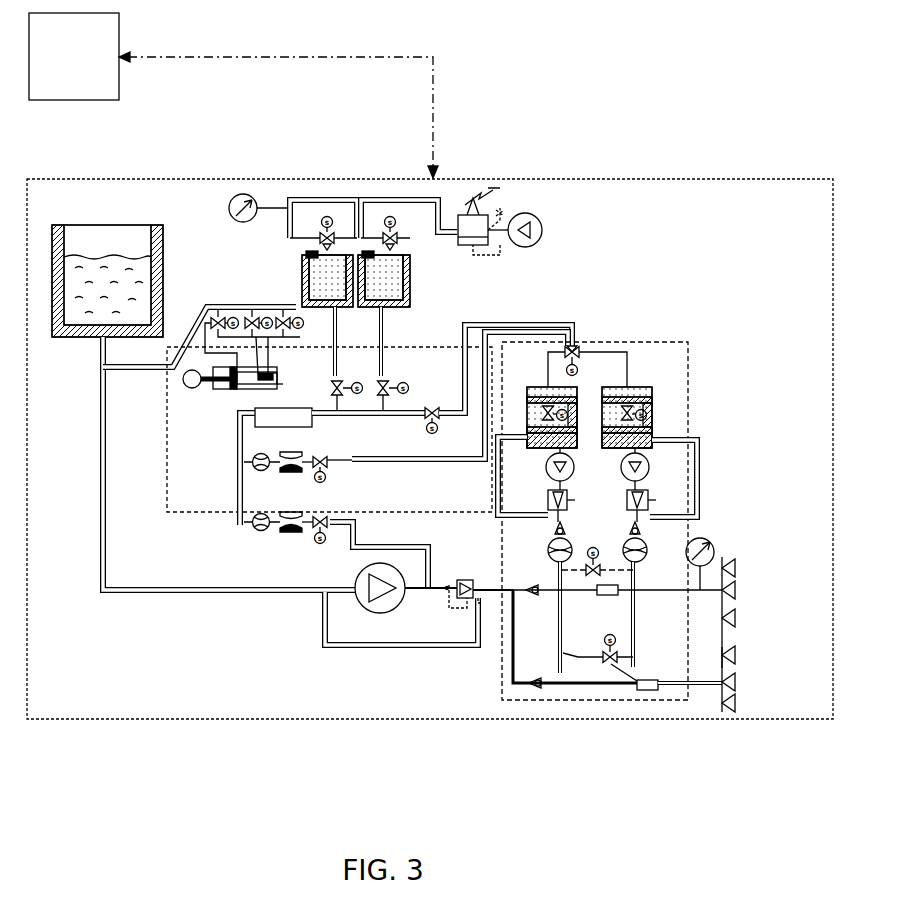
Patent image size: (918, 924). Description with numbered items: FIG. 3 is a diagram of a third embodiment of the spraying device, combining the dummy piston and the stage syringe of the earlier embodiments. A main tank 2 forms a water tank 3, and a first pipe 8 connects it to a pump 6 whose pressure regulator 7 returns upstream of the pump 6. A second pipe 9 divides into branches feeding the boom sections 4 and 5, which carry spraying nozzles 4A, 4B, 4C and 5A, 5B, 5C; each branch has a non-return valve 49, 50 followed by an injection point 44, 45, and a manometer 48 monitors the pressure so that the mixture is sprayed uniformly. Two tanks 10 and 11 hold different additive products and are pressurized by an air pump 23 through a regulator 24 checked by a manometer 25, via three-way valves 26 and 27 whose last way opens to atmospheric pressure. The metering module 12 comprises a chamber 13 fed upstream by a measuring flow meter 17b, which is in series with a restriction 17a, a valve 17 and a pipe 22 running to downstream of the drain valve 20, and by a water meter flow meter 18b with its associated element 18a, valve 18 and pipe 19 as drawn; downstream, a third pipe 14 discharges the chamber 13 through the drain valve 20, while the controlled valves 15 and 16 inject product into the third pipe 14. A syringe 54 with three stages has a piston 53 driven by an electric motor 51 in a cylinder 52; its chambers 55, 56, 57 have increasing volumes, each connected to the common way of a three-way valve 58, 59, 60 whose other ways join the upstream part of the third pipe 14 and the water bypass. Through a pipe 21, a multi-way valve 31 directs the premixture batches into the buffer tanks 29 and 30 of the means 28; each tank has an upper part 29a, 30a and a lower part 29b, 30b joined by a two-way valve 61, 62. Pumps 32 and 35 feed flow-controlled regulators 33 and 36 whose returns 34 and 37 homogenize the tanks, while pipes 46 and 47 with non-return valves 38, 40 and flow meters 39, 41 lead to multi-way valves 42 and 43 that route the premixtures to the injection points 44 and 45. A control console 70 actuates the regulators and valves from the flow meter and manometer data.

The main tank 2 is at (57, 224).
The water tank 3 is at (104, 258).
The boom section 4 is at (720, 607).
The spraying nozzle 4A is at (737, 567).
The spraying nozzle 4B is at (737, 590).
The spraying nozzle 4C is at (737, 618).
The boom section 5 is at (720, 705).
The spraying nozzle 5A is at (737, 654).
The spraying nozzle 5B is at (737, 682).
The spraying nozzle 5C is at (737, 704).
The pump 6 is at (357, 578).
The pressure regulator 7 is at (461, 579).
The first pipe 8 is at (100, 590).
The second pipe 9 is at (511, 668).
The additive product tank 10 is at (302, 294).
The additive product tank 11 is at (412, 294).
The metering module 12 is at (167, 505).
The chamber 13 is at (276, 427).
The third pipe 14 is at (370, 416).
The controlled valve 15 is at (343, 378).
The controlled valve 16 is at (389, 379).
The valve 17 is at (328, 468).
The restriction 17a is at (292, 472).
The measuring flow meter 17b is at (254, 468).
The valve 18 is at (316, 530).
The check element 18a is at (290, 534).
The water meter flow meter 18b is at (254, 530).
The pipe 19 is at (388, 547).
The drain valve 20 is at (426, 420).
The pipe 21 is at (463, 362).
The pipe 22 is at (433, 462).
The air pump 23 is at (536, 217).
The regulator 24 is at (463, 214).
The manometer 25 is at (233, 217).
The three-way valve 26 is at (323, 234).
The three-way valve 27 is at (396, 234).
The directing and injecting means 28 is at (688, 340).
The buffer tank 29 is at (528, 391).
The upper part 29a is at (528, 400).
The lower part 29b is at (528, 431).
The buffer tank 30 is at (650, 390).
The upper part 30a is at (652, 400).
The lower part 30b is at (652, 433).
The multi-way valve 31 is at (578, 346).
The pump 32 is at (546, 469).
The flow-controlled regulator 33 is at (548, 502).
The return 34 is at (497, 515).
The pump 35 is at (650, 470).
The flow-controlled regulator 36 is at (649, 502).
The return 37 is at (700, 492).
The non-return valve 38 is at (554, 529).
The flow meter 39 is at (548, 551).
The non-return valve 40 is at (641, 529).
The flow meter 41 is at (648, 551).
The multi-way valve 42 is at (597, 563).
The multi-way valve 43 is at (608, 662).
The injection point 44 is at (603, 595).
The injection point 45 is at (650, 680).
The pipe 46 is at (563, 626).
The pipe 47 is at (633, 622).
The manometer 48 is at (712, 540).
The non-return valve 49 is at (532, 596).
The non-return valve 50 is at (535, 678).
The electric motor 51 is at (190, 388).
The cylinder 52 is at (206, 384).
The piston 53 is at (236, 390).
The syringe with stages 54 is at (240, 386).
The chamber 55 is at (278, 386).
The chamber 56 is at (274, 377).
The chamber 57 is at (277, 370).
The three-way valve 58 is at (214, 318).
The three-way valve 59 is at (248, 318).
The three-way valve 60 is at (279, 318).
The two-way valve 61 is at (565, 421).
The two-way valve 62 is at (622, 421).
The control console 70 is at (233, 95).